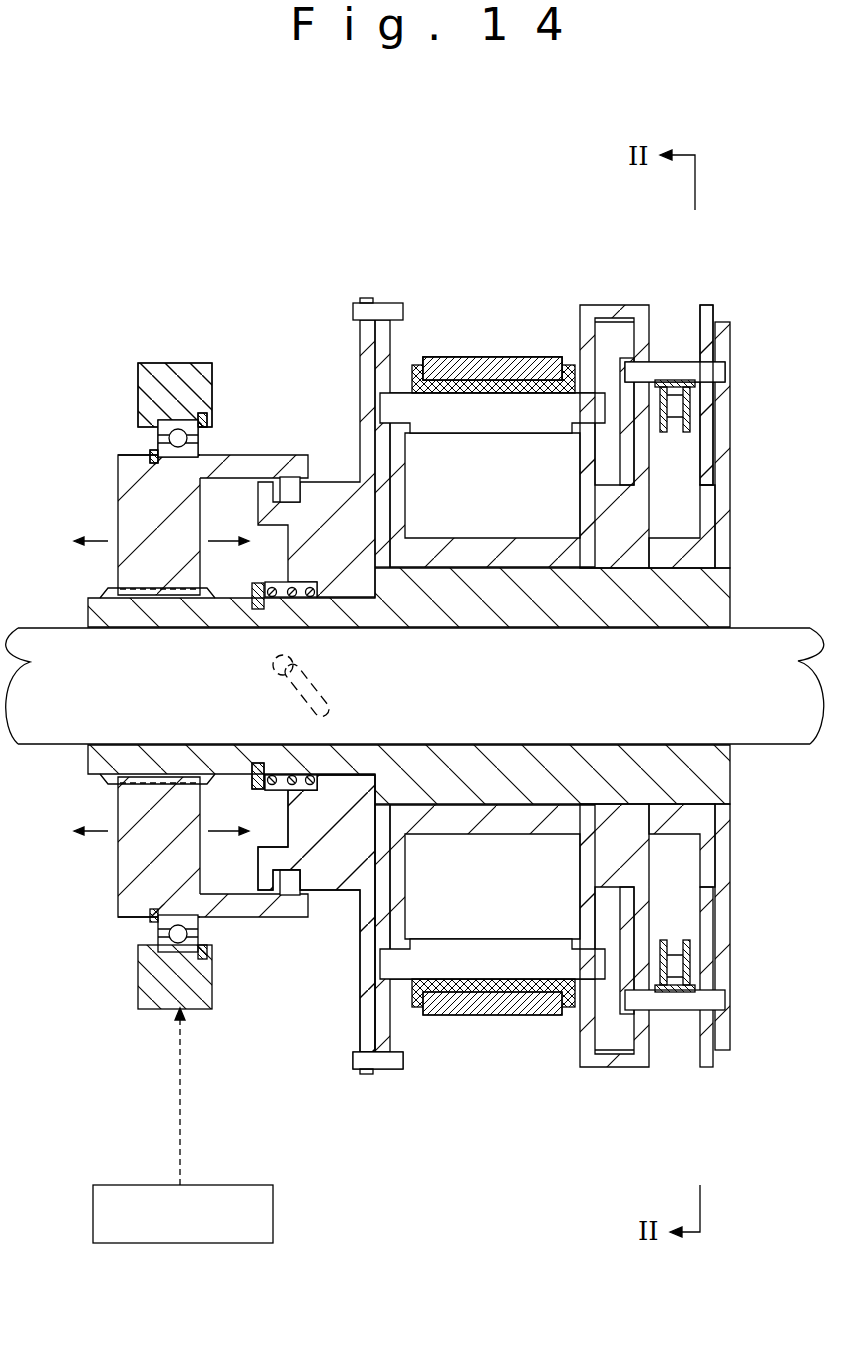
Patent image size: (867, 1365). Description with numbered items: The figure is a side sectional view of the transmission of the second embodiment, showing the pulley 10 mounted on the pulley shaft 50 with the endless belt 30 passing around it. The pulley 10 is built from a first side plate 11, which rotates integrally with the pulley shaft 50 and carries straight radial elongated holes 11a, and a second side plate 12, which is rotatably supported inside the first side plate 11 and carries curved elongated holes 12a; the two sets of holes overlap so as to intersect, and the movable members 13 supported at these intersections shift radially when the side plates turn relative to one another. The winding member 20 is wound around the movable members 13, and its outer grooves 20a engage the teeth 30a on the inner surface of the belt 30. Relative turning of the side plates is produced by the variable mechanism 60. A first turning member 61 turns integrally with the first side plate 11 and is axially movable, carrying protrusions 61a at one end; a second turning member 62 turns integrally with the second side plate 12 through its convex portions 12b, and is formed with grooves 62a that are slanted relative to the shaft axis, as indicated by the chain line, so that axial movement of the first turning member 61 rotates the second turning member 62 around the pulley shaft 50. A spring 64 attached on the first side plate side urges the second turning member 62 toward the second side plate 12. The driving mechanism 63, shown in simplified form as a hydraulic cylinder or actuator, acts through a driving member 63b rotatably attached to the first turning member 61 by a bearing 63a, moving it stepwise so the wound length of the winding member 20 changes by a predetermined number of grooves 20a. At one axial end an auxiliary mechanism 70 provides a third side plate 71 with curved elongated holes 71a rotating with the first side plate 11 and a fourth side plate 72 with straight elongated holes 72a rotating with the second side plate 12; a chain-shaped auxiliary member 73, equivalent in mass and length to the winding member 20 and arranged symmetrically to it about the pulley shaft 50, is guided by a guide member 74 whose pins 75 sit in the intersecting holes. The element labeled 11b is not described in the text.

The pulley 10 is at (467, 296).
The first side plate 11 is at (405, 872).
The elongated holes 11a is at (362, 950).
The stator end cap 11b is at (352, 1056).
The second side plate 12 is at (405, 1052).
The elongated holes 12a is at (470, 950).
The convex portions 12b is at (374, 1076).
The movable members 13 is at (578, 335).
The winding member 20 is at (548, 406).
The grooves 20a is at (472, 408).
The belt 30 is at (437, 355).
The teeth 30a is at (508, 356).
The pulley shaft 50 is at (46, 720).
The variable mechanism 60 is at (108, 384).
The first turning member 61 is at (118, 518).
The protrusions 61a is at (283, 465).
The second turning member 62 is at (368, 345).
The grooves 62a is at (318, 482).
The driving mechanism 63 is at (176, 1250).
The bearing 63a is at (158, 440).
The driving member 63b is at (178, 360).
The spring 64 is at (296, 884).
The auxiliary mechanism 70 is at (676, 312).
The third side plate 71 is at (715, 924).
The elongated holes 71a is at (652, 1022).
The fourth side plate 72 is at (695, 855).
The elongated holes 72a is at (727, 948).
The auxiliary member 73 is at (690, 430).
The guide member 74 is at (690, 360).
The pins 75 is at (712, 372).